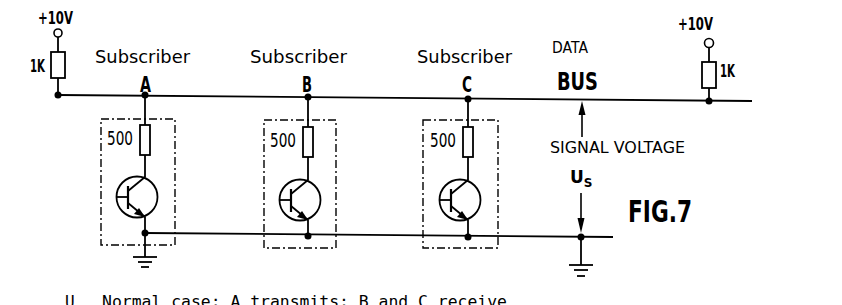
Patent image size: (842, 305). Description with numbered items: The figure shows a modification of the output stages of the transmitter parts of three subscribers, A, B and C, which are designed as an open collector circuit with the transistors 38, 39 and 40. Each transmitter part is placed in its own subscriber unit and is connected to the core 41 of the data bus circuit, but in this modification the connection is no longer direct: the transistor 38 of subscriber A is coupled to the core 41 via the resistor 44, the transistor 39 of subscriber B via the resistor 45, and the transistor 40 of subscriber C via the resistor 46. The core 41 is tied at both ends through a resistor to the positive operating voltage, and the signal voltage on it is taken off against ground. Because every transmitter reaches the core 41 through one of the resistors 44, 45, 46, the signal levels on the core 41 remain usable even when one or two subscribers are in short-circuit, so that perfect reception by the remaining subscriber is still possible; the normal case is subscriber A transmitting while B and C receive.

The transistor 38 is at (158, 197).
The transistor 39 is at (321, 200).
The transistor 40 is at (481, 200).
The core 41 is at (645, 100).
The resistor 44 is at (150, 141).
The resistor 45 is at (313, 143).
The resistor 46 is at (473, 143).